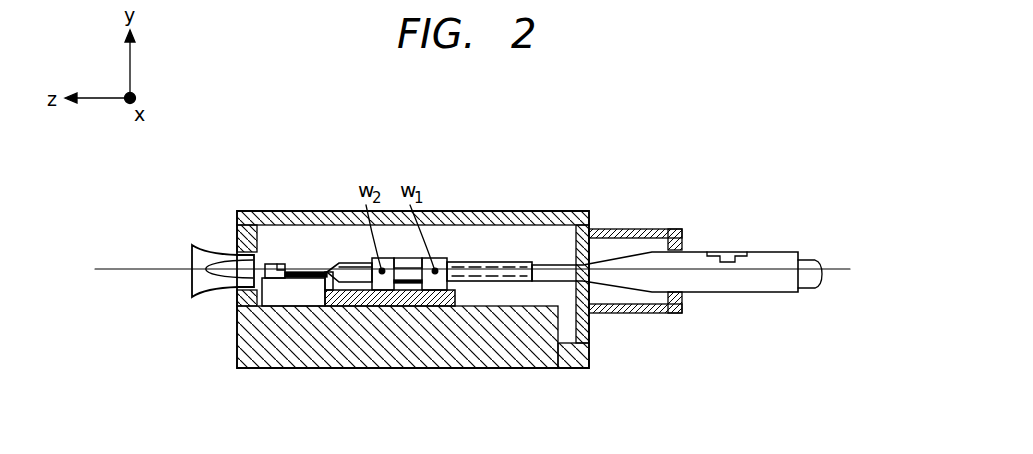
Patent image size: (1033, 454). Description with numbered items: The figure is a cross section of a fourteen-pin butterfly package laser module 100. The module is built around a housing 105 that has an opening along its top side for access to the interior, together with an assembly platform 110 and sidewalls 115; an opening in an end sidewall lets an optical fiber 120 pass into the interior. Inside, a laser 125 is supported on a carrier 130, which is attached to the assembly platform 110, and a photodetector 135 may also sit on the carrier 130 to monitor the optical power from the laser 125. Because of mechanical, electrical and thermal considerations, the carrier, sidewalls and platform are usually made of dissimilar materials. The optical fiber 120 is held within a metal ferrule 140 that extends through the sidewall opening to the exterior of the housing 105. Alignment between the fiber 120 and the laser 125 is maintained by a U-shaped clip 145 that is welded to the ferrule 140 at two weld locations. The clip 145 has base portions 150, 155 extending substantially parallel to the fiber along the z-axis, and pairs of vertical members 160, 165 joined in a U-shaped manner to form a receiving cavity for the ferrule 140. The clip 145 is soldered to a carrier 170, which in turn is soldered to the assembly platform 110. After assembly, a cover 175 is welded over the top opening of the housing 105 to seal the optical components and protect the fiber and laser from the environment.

The laser module 100 is at (688, 128).
The housing 105 is at (271, 196).
The assembly platform 110 is at (589, 362).
The sidewalls 115 is at (510, 236).
The optical fiber 120 is at (350, 262).
The laser 125 is at (322, 266).
The carrier 130 is at (300, 307).
The photodetector 135 is at (278, 275).
The metal ferrule 140 is at (470, 261).
The U-shaped clip 145 is at (447, 289).
The base portion 150 is at (372, 306).
The base portion 155 is at (329, 281).
The vertical members 160 is at (442, 257).
The vertical members 165 is at (405, 257).
The carrier 170 is at (403, 306).
The cover 175 is at (571, 211).